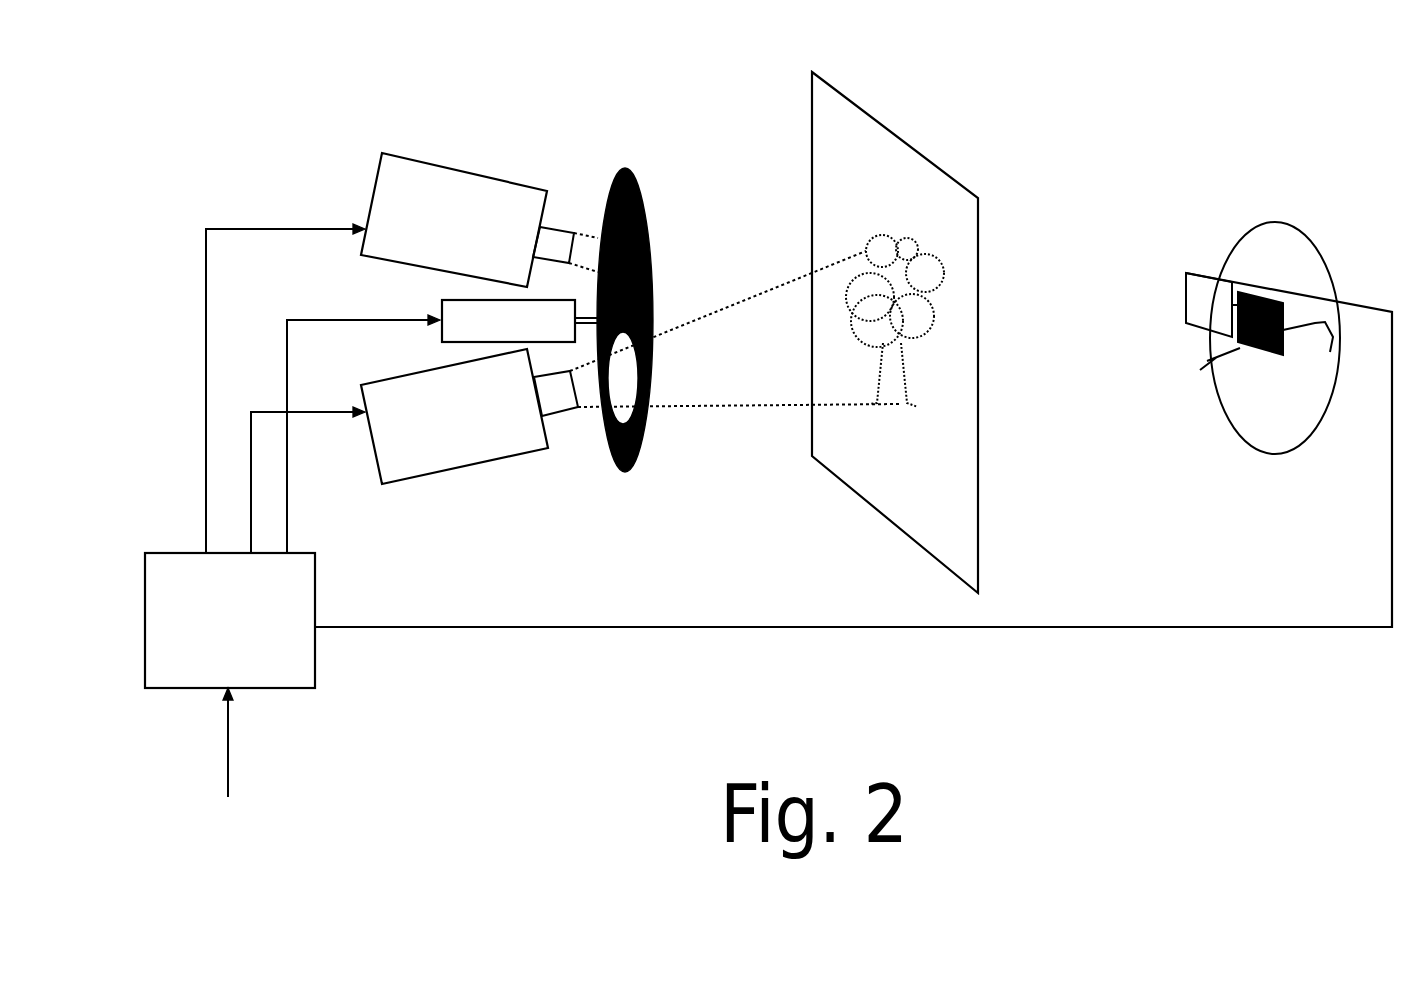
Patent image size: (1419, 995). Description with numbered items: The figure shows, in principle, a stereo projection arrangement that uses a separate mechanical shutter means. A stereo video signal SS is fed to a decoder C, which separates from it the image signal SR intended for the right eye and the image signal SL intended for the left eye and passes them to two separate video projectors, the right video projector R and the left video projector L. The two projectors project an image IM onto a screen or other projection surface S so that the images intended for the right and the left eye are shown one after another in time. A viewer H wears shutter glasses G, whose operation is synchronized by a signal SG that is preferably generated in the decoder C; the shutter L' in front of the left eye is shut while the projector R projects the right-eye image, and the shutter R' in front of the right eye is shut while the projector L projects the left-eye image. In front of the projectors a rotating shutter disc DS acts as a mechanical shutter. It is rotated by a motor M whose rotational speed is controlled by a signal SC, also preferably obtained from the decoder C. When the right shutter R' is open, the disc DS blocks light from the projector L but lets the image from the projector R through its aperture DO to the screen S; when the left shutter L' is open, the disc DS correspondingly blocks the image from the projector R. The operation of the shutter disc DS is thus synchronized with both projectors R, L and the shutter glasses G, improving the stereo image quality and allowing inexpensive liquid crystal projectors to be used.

The left video projector L is at (479, 220).
The right video projector R is at (469, 416).
The motor M is at (520, 325).
The decoder C is at (230, 620).
The shutter disc DS is at (630, 166).
The aperture DO is at (620, 390).
The screen S is at (895, 332).
The image IM is at (895, 321).
The image signal for the left eye SL is at (208, 293).
The synchronizing signal for the shutter disc SC is at (362, 318).
The image signal for the right eye SR is at (252, 448).
The shutter glasses synchronizing signal SG is at (458, 627).
The stereo video signal SS is at (232, 735).
The right eye shutter R' is at (1251, 251).
The left eye shutter L' is at (1305, 269).
The shutter glasses G is at (1330, 318).
The viewer H is at (1268, 397).